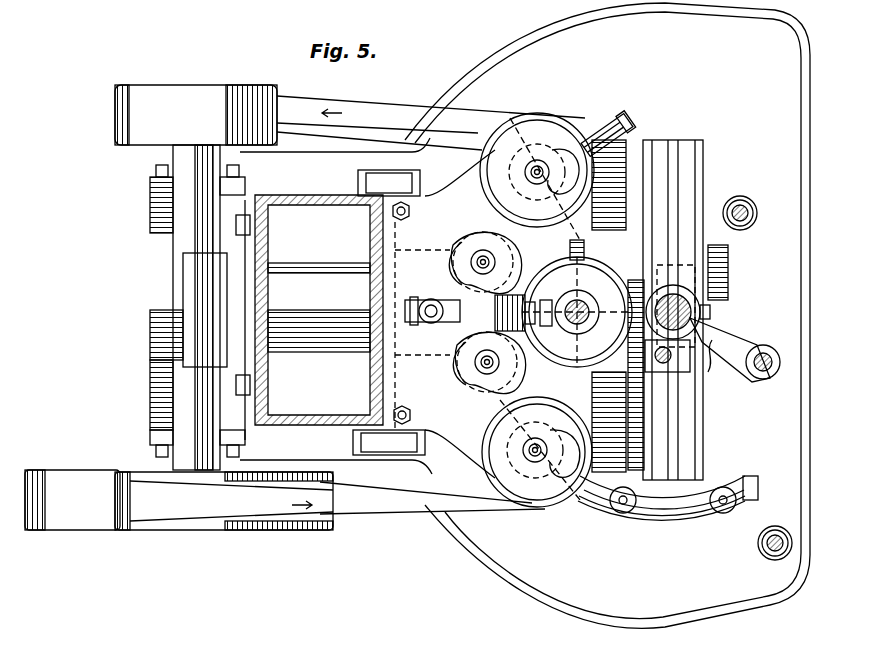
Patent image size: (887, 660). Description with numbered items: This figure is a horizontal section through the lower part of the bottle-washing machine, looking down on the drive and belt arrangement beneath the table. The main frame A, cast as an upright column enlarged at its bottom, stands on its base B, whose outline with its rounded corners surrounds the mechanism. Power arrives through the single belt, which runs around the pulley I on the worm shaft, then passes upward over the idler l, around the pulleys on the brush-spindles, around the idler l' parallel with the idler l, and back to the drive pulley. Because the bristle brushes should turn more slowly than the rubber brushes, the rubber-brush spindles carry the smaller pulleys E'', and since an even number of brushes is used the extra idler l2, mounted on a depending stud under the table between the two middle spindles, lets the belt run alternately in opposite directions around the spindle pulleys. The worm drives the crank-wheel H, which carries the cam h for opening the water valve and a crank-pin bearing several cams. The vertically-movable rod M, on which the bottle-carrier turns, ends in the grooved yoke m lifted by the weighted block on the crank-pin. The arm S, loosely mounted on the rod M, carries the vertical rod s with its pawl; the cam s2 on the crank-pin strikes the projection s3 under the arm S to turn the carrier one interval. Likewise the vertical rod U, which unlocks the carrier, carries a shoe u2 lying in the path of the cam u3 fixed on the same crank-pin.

The base B is at (525, 315).
The main frame A is at (319, 310).
The idler l' is at (196, 115).
The idler l is at (224, 518).
The pulley I is at (72, 500).
The pulley E'' is at (500, 262).
The crank-wheel H is at (609, 306).
The cam h is at (585, 250).
The extra idler l2 is at (563, 312).
The grooved cross-head or yoke m is at (698, 184).
The vertically-movable rod M is at (700, 308).
The arm S is at (735, 346).
The vertical rod s is at (768, 380).
The cam s2 is at (728, 270).
The projection s3 is at (725, 364).
The vertical rod U is at (663, 365).
The shoe u2 is at (640, 455).
The cam u3 is at (636, 292).